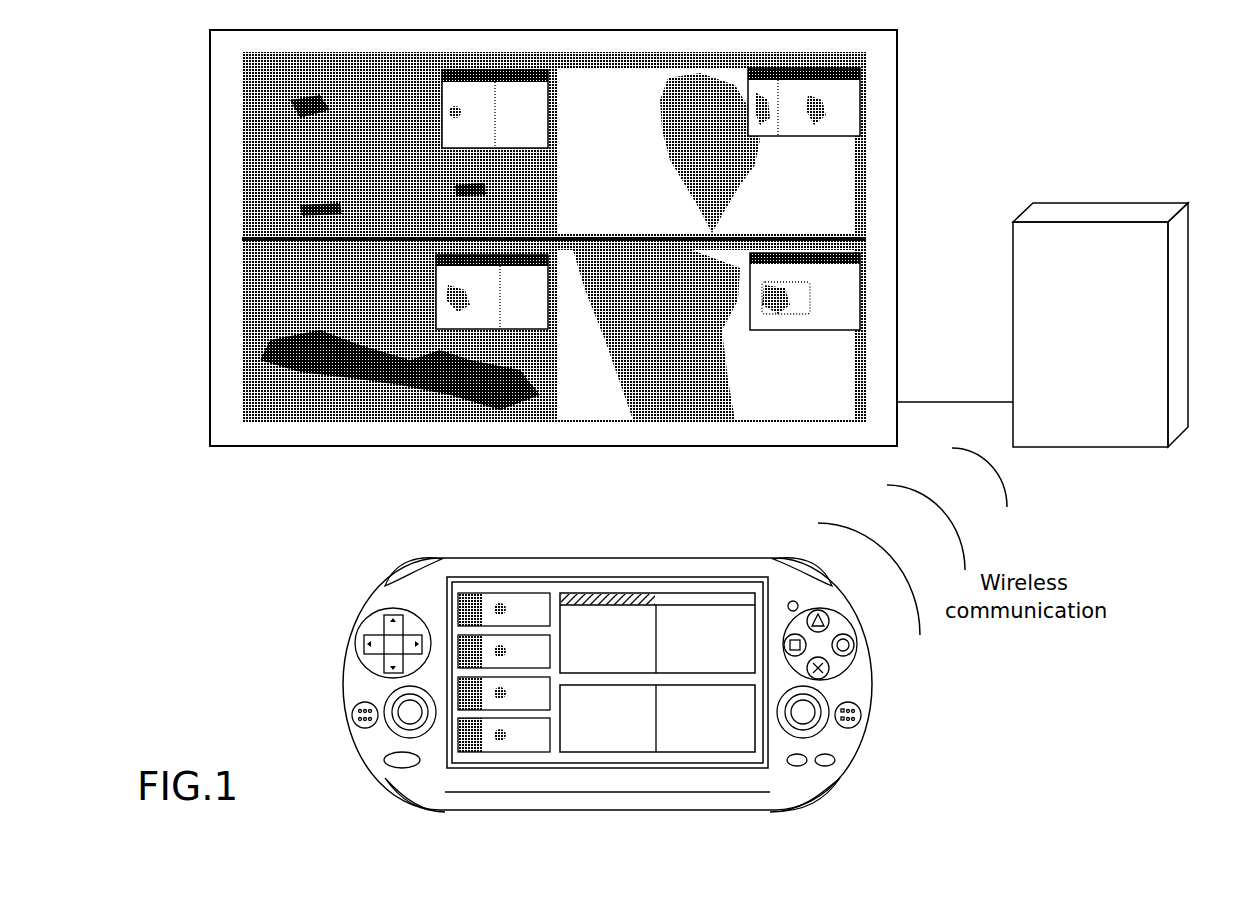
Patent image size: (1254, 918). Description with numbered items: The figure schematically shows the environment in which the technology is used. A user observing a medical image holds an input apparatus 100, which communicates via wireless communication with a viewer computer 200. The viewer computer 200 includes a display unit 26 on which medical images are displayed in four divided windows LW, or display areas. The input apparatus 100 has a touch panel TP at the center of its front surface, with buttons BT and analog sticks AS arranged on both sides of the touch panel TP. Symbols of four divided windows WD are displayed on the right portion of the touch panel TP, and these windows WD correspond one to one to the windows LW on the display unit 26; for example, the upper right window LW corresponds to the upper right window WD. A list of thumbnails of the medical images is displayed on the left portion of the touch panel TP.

The display unit 26 is at (564, 238).
The viewer computer 200 is at (1168, 203).
The windows LW is at (243, 140).
The input apparatus 100 is at (615, 680).
The touch panel TP is at (607, 680).
The windows WD is at (628, 620).
The buttons BT is at (373, 665).
The analog sticks AS is at (408, 713).